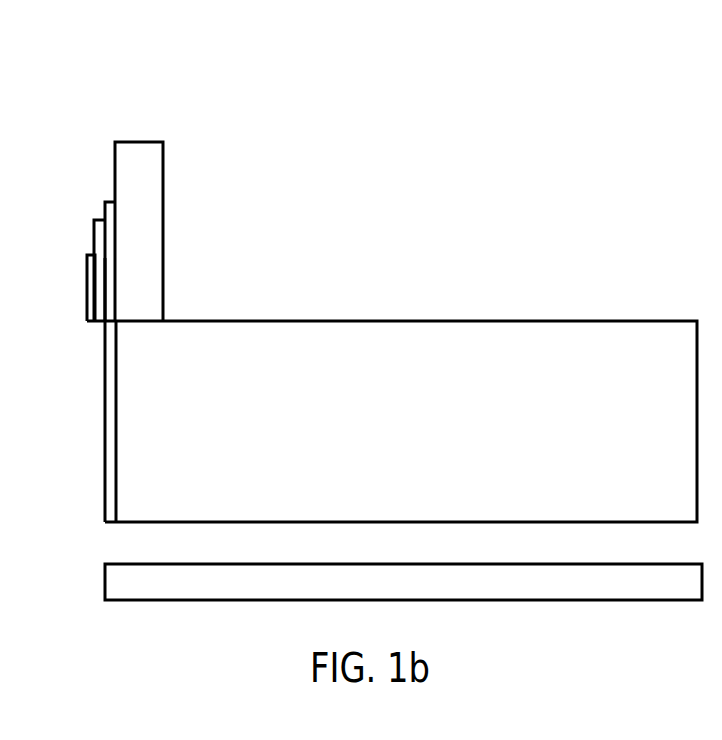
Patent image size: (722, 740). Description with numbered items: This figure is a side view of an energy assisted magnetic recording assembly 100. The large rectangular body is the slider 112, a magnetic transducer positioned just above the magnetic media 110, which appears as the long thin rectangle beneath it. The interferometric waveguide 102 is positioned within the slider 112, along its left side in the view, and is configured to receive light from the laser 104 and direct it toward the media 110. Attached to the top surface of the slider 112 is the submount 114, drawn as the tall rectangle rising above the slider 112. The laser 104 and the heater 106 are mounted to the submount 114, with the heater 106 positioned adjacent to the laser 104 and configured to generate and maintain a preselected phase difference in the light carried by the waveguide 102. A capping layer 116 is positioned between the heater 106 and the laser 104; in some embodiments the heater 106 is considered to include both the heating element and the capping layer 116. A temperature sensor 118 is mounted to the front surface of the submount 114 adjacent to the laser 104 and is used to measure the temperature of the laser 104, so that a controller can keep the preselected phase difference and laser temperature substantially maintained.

The energy assisted magnetic recording assembly 100 is at (417, 127).
The interferometric waveguide 102 is at (105, 429).
The laser 104 is at (113, 264).
The heater 106 is at (87, 309).
The magnetic media 110 is at (421, 594).
The slider 112 is at (382, 455).
The submount 114 is at (138, 141).
The capping layer 116 is at (93, 239).
The temperature sensor 118 is at (104, 207).